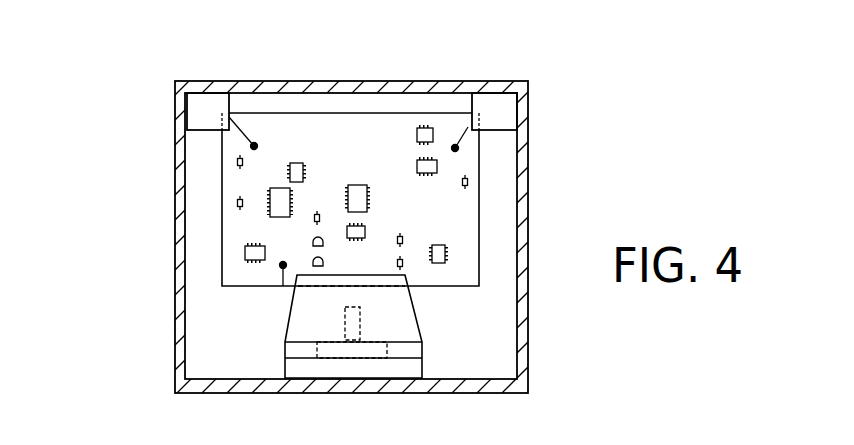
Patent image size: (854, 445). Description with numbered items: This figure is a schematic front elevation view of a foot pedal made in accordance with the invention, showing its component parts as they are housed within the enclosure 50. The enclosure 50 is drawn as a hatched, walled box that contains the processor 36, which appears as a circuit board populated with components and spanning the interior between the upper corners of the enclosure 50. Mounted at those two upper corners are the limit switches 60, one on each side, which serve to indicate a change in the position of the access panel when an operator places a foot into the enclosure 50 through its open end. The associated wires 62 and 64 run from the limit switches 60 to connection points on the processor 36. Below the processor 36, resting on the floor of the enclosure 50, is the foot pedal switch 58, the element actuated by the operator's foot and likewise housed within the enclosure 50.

The enclosure 50 is at (175, 313).
The limit switches 60 is at (197, 118).
The processor 36 is at (468, 208).
The wire 62 is at (468, 127).
The wire 64 is at (283, 284).
The foot pedal switch 58 is at (400, 308).